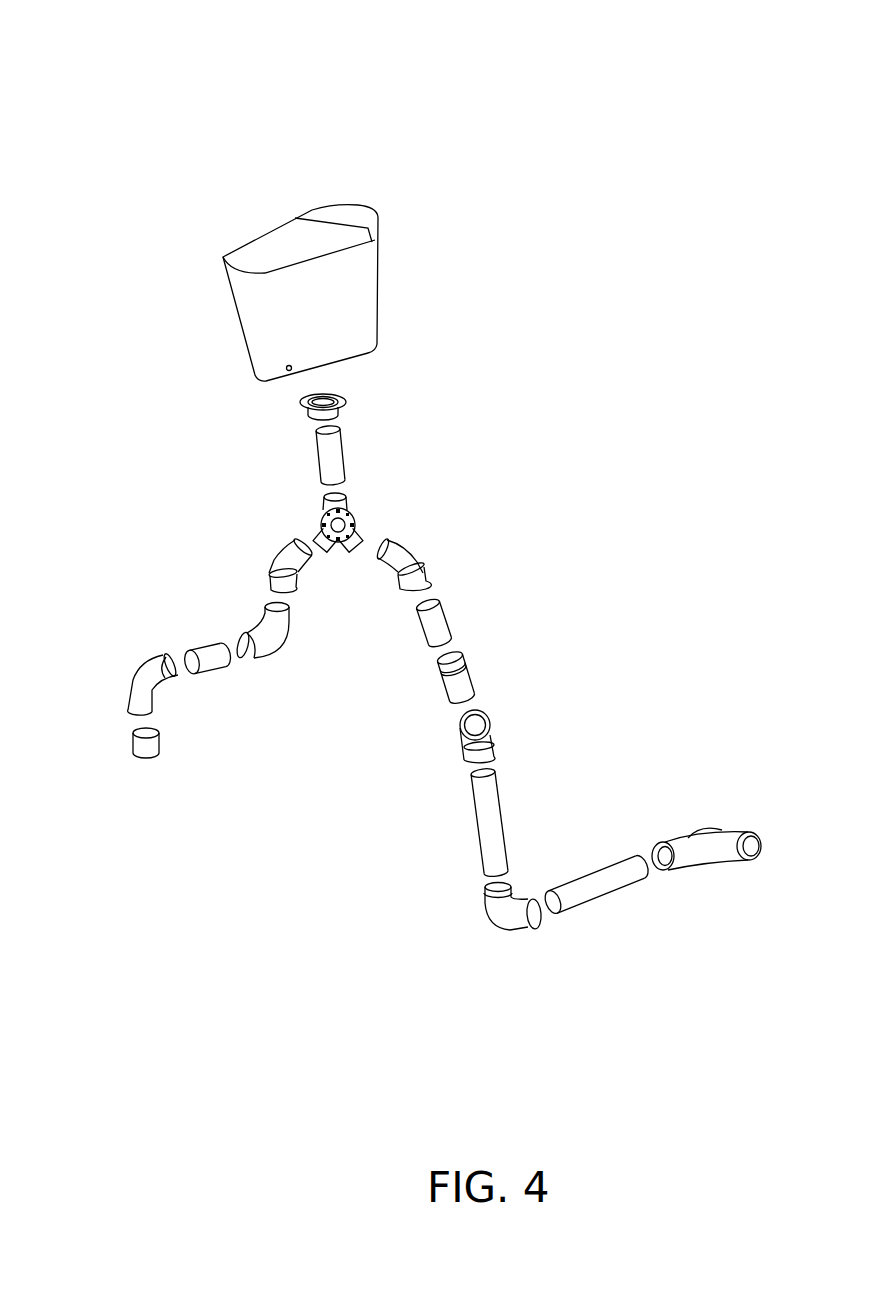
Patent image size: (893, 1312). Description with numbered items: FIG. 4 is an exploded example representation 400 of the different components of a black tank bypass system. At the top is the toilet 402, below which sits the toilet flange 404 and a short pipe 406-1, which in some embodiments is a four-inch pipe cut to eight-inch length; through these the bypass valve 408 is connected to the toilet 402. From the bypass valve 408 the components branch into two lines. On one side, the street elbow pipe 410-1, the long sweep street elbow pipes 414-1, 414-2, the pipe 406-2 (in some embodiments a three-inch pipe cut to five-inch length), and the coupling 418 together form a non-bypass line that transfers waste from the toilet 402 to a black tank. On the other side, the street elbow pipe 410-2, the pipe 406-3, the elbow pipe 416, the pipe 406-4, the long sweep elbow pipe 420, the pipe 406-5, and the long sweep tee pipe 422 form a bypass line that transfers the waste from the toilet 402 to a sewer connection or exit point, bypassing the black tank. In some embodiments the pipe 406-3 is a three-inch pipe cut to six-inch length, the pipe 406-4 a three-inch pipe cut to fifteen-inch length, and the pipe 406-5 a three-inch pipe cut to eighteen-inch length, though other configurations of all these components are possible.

The example representation 400 is at (205, 54).
The toilet 402 is at (399, 189).
The toilet flange 404 is at (359, 401).
The pipe 406-1 is at (309, 460).
The pipe 406-2 is at (213, 680).
The pipe 406-3 is at (454, 614).
The pipe 406-4 is at (505, 779).
The pipe 406-5 is at (602, 857).
The bypass valve 408 is at (378, 502).
The street elbow pipe 410-1 is at (262, 562).
The street elbow pipe 410-2 is at (418, 544).
The long sweep street elbow pipe 414-1 is at (255, 616).
The long sweep street elbow pipe 414-2 is at (120, 700).
The elbow pipe 416 is at (501, 723).
The coupling 418 is at (132, 761).
The long sweep elbow pipe 420 is at (488, 928).
The long sweep tee pipe 422 is at (728, 821).